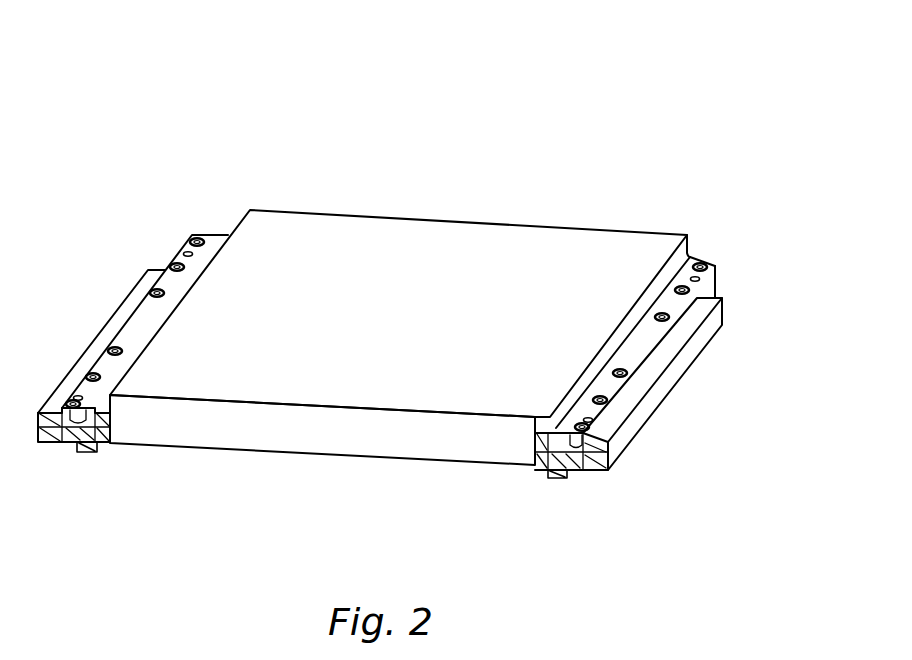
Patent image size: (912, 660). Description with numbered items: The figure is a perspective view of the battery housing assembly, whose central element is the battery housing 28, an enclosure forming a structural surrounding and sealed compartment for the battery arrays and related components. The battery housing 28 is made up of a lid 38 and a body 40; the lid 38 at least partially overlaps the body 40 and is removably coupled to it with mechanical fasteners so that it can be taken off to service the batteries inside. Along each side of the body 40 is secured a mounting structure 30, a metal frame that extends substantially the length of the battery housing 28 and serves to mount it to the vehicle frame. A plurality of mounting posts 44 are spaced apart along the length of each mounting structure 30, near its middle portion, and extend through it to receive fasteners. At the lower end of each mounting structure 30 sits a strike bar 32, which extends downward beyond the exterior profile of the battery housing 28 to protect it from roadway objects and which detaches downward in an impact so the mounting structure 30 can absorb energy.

The battery housing 28 is at (417, 298).
The mounting structure 30 is at (132, 320).
The strike bar 32 is at (80, 453).
The lid 38 is at (478, 268).
The body 40 is at (390, 447).
The mounting post 44 is at (598, 428).